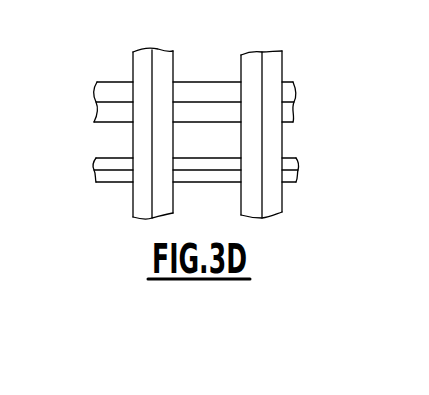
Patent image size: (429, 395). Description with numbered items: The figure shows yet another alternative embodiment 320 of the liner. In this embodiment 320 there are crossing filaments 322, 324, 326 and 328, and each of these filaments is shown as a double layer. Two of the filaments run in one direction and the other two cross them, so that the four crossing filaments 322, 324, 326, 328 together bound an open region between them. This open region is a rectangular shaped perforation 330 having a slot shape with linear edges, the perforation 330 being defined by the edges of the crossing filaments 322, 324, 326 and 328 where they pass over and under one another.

The embodiment 320 is at (216, 127).
The filament 322 is at (180, 130).
The filament 324 is at (188, 177).
The filament 326 is at (274, 70).
The filament 328 is at (217, 92).
The perforation 330 is at (233, 151).